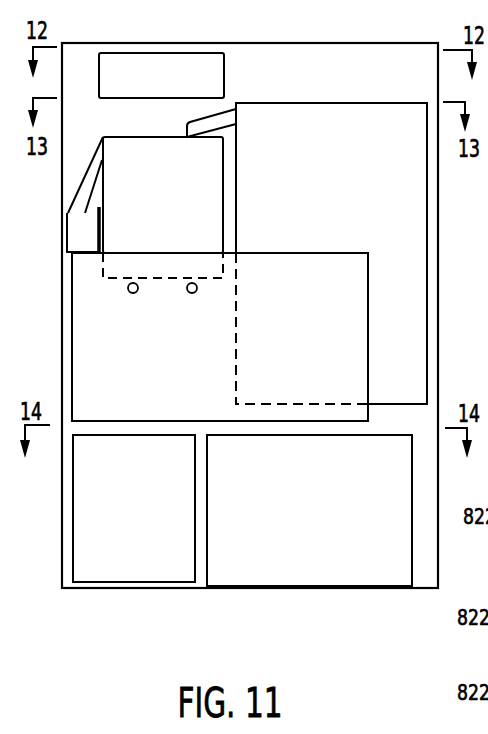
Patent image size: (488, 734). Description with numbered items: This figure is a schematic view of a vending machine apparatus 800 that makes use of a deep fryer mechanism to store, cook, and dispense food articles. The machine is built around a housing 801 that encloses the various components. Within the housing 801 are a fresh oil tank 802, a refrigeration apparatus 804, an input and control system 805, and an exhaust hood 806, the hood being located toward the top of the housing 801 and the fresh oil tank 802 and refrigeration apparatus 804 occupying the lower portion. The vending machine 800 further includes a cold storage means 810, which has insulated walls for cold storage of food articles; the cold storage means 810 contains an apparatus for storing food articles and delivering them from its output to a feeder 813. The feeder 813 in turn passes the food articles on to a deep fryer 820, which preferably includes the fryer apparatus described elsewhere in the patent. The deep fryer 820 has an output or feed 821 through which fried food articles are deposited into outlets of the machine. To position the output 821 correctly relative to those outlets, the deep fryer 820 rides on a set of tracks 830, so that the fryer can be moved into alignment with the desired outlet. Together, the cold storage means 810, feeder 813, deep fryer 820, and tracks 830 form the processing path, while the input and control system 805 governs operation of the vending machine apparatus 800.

The vending machine apparatus 800 is at (280, 600).
The housing 801 is at (440, 335).
The fresh oil tank 802 is at (143, 524).
The refrigeration apparatus 804 is at (314, 524).
The input and control system 805 is at (170, 387).
The exhaust hood 806 is at (170, 85).
The cold storage means 810 is at (346, 183).
The feeder 813 is at (226, 110).
The deep fryer 820 is at (181, 211).
The output or feed 821 is at (94, 166).
The tracks 830 is at (137, 292).